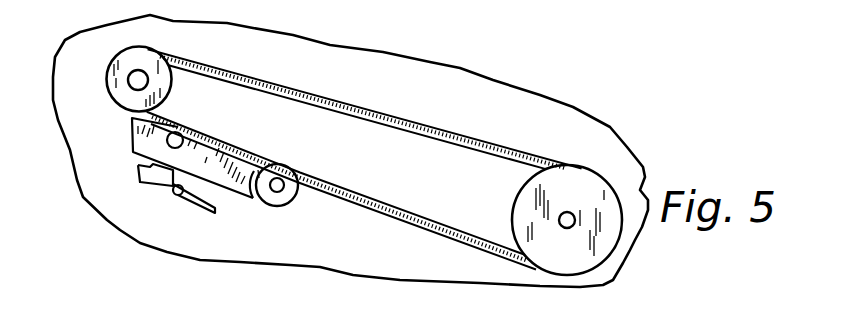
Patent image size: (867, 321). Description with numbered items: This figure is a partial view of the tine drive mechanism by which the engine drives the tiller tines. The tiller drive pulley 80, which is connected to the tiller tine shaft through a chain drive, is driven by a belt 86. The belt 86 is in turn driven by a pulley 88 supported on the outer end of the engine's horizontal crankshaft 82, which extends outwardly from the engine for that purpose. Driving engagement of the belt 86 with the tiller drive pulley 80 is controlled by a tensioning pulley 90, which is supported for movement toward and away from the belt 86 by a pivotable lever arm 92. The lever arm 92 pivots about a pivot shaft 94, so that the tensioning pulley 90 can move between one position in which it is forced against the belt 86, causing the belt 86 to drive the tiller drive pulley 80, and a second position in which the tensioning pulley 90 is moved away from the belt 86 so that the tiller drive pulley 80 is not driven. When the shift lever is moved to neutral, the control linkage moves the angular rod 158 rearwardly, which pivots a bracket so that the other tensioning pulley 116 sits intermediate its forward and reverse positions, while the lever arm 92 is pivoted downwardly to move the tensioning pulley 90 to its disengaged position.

The tiller drive pulley 80 is at (525, 195).
The crankshaft 82 is at (130, 80).
The belt 86 is at (382, 113).
The pulley 88 is at (148, 90).
The tensioning pulley 90 is at (281, 206).
The lever arm 92 is at (242, 176).
The pivot shaft 94 is at (181, 134).
The angular rod 158 is at (202, 215).
The tensioning pulley 116 is at (132, 315).